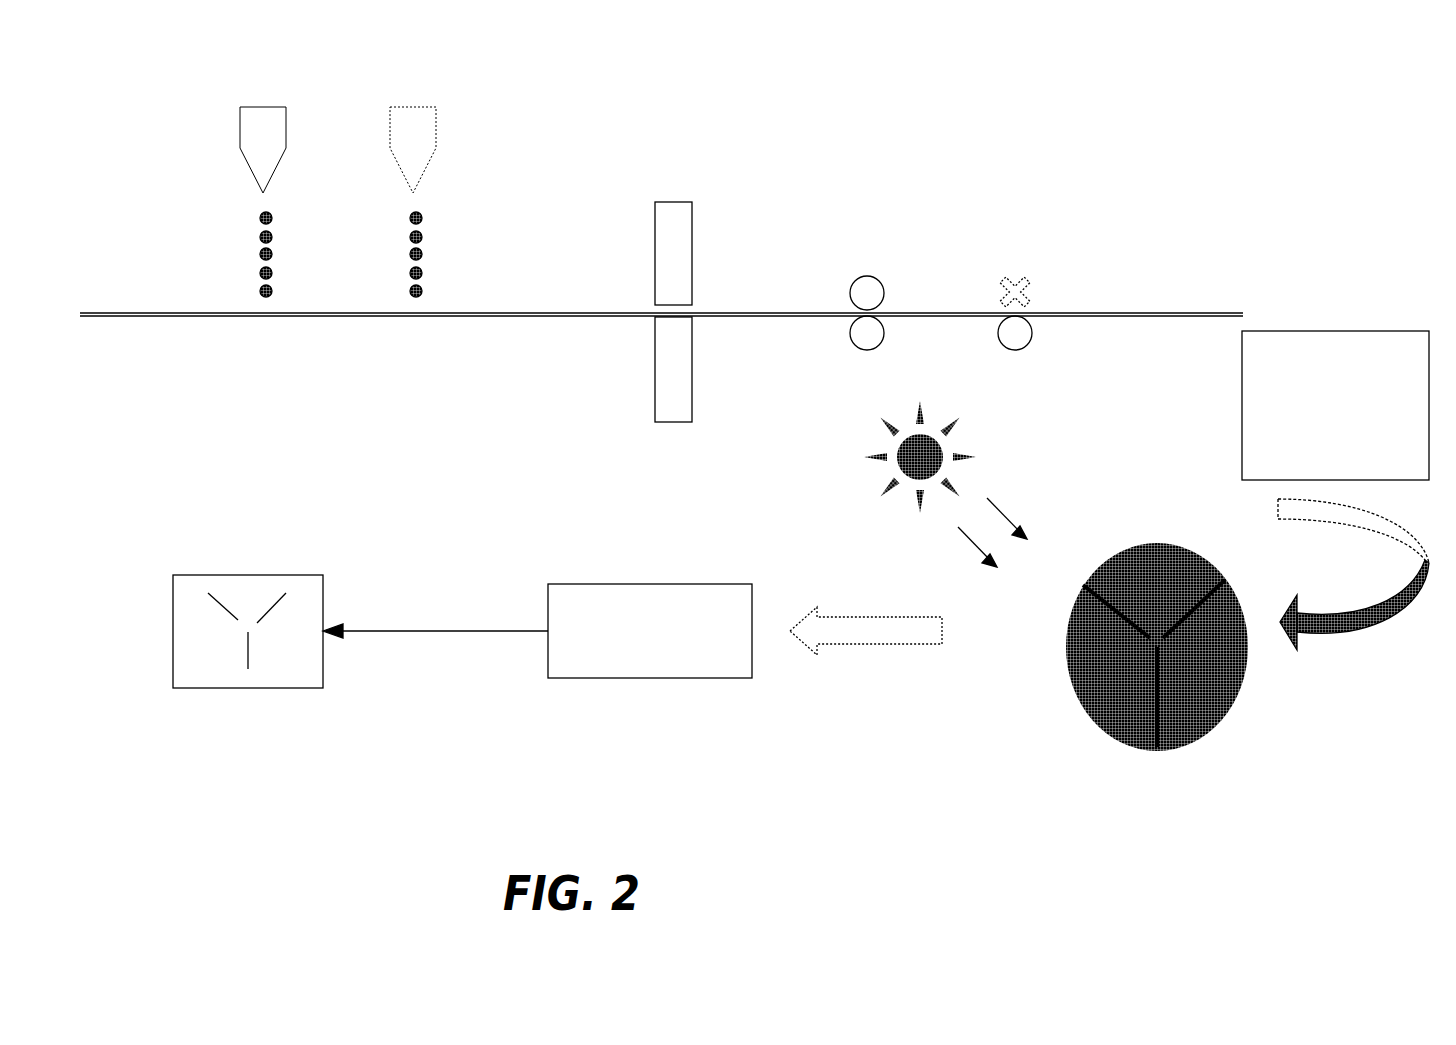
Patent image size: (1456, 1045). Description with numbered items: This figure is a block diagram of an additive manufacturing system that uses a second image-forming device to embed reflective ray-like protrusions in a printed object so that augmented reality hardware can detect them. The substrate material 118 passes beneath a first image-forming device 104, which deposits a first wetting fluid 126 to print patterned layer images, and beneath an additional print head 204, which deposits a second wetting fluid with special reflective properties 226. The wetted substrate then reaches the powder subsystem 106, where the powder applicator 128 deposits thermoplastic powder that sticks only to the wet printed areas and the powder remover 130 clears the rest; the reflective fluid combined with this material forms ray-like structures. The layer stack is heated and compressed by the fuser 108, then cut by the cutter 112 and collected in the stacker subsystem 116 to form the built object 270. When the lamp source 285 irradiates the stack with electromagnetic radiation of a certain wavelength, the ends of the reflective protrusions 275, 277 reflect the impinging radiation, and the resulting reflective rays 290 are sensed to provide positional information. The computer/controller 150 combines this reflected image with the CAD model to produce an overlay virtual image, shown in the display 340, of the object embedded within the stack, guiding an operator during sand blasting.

The image-forming device 104 is at (263, 113).
The additional print head 204 is at (413, 113).
The substrate material 118 is at (140, 313).
The first wetting fluid 126 is at (265, 254).
The wetting fluid with reflective properties 226 is at (415, 257).
The powder subsystem 106 is at (622, 236).
The powder applicator 128 is at (683, 199).
The powder remover 130 is at (655, 393).
The fuser 108 is at (866, 287).
The cutter 112 is at (1010, 287).
The stacker subsystem 116 is at (1422, 331).
The lamp source 285 is at (968, 448).
The display 340 is at (250, 576).
The computer/controller 150 is at (634, 584).
The reflective rays 290 is at (860, 627).
The reflective ray-like protrusion 275 is at (1082, 583).
The reflective ray-like protrusion 277 is at (1207, 582).
The built object 270 is at (1088, 633).